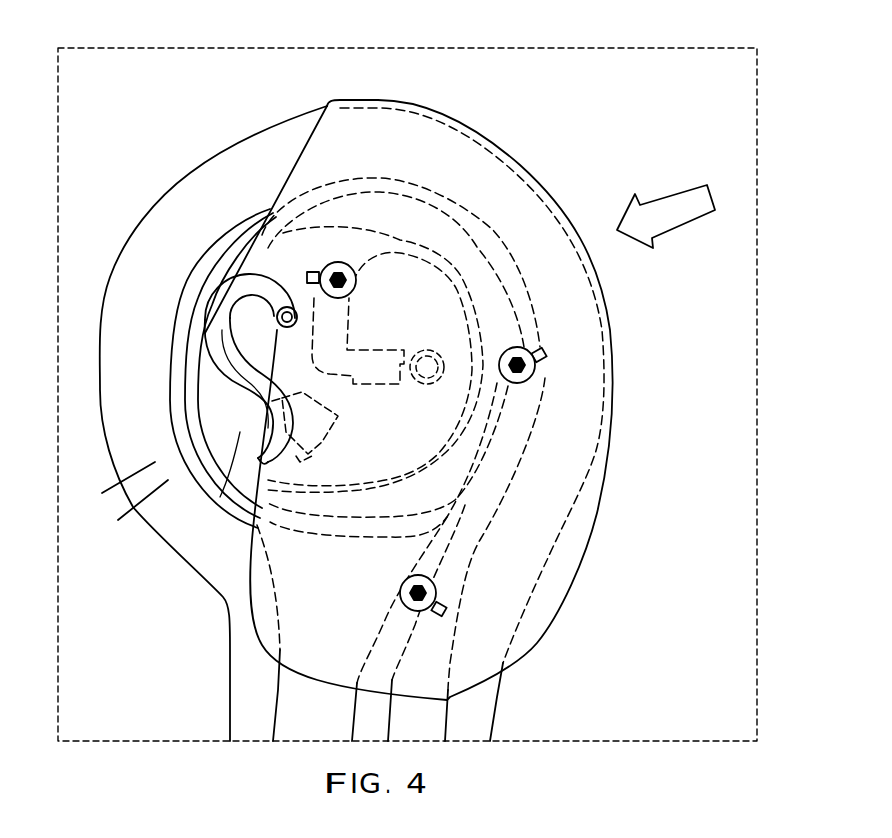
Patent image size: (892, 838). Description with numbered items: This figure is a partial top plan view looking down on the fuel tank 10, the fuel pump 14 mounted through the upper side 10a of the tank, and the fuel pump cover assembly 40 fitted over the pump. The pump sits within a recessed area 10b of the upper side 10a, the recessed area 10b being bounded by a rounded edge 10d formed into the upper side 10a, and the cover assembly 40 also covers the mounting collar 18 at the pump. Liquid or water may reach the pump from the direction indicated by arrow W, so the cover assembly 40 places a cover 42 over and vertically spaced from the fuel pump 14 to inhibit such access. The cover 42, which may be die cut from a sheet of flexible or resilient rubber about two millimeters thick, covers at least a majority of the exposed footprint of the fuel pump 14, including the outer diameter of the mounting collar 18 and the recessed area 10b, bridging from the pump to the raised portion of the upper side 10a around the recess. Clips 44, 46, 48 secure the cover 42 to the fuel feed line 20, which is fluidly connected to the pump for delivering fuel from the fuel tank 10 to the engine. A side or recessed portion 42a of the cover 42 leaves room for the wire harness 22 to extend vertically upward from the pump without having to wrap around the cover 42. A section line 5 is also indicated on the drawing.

The fuel tank 10 is at (197, 83).
The upper side 10a is at (186, 690).
The recessed area 10b is at (174, 541).
The edge 10d is at (230, 250).
The fuel pump 14 is at (253, 407).
The mounting collar 18 is at (250, 447).
The fuel feed line 20 is at (365, 713).
The wire harness 22 is at (218, 345).
The fuel pump cover assembly 40 is at (539, 682).
The cover 42 is at (587, 345).
The side or recessed portion 42a is at (255, 452).
The clip 44 is at (312, 257).
The clip 46 is at (550, 333).
The clip 48 is at (437, 563).
The section line 5- 5 is at (455, 633).
The arrow W is at (672, 193).